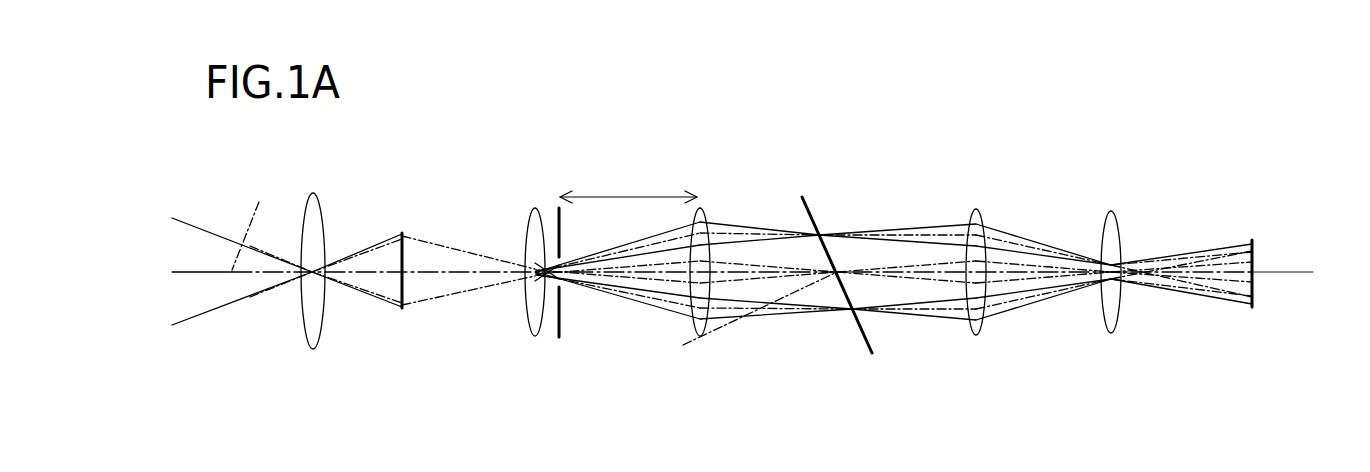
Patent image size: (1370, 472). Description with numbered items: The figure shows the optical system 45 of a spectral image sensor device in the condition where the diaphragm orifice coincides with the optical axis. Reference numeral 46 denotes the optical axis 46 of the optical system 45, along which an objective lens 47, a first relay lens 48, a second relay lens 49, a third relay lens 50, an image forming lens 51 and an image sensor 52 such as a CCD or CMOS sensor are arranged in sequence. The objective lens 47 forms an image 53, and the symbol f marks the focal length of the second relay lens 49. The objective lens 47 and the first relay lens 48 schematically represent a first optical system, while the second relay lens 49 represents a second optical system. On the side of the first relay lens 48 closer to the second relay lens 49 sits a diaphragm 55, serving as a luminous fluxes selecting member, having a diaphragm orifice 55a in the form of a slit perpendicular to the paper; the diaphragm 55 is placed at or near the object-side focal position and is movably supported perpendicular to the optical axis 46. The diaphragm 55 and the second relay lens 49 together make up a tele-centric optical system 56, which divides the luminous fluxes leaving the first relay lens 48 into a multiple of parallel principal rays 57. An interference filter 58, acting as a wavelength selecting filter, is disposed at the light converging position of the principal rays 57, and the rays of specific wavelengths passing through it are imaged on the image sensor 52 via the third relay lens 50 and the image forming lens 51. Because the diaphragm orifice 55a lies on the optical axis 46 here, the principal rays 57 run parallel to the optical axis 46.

The optical system 45 is at (895, 151).
The optical axis 46 is at (268, 198).
The objective lens 47 is at (313, 347).
The first relay lens 48 is at (528, 318).
The second relay lens 49 is at (705, 330).
The third relay lens 50 is at (983, 337).
The image forming lens 51 is at (1115, 333).
The image sensor 52 is at (1253, 254).
The image 53 is at (403, 258).
The diaphragm 55 is at (560, 320).
The diaphragm orifice 55a is at (562, 258).
The tele-centric optical system 56 is at (663, 183).
The principal ray 57 is at (772, 316).
The interference filter 58 is at (872, 353).